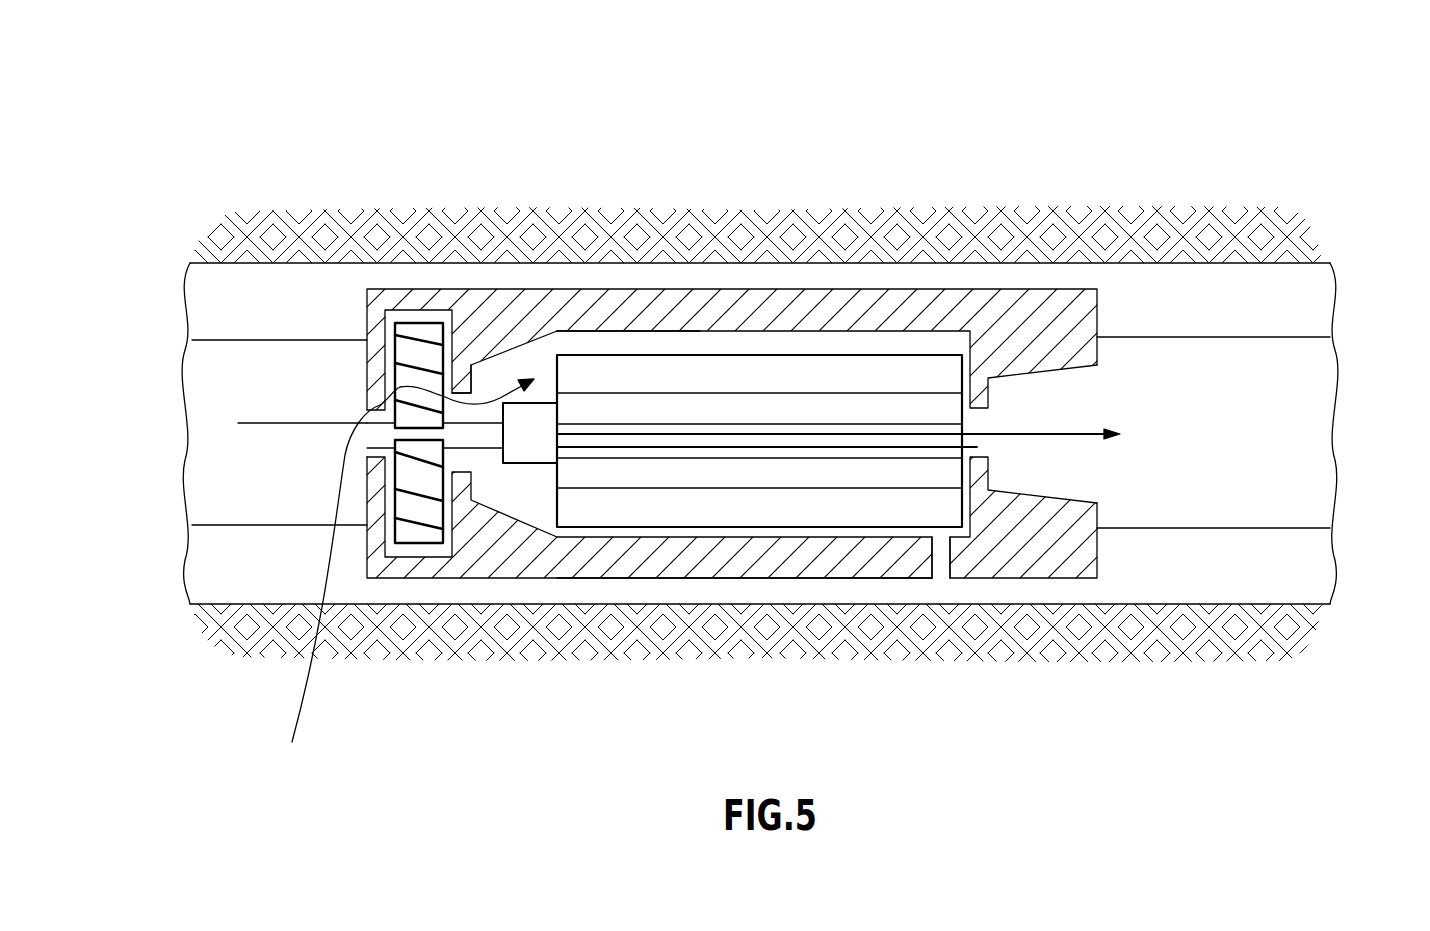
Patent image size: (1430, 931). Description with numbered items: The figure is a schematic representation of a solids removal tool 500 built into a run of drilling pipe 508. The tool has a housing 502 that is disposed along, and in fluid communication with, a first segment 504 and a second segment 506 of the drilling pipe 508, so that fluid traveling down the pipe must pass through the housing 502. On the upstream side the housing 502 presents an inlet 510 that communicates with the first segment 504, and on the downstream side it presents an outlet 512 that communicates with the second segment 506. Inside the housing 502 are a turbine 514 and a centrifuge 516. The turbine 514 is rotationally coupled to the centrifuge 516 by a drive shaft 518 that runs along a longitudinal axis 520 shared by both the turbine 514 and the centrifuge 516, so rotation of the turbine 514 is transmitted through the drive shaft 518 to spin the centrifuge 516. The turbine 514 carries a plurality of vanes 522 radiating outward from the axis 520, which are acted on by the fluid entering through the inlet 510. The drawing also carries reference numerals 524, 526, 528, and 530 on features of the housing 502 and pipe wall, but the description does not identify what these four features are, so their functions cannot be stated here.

The solids removal tool 500 is at (558, 98).
The housing 502 is at (922, 312).
The first segment 504 is at (212, 481).
The second segment 506 is at (1292, 383).
The drilling pipe 508 is at (191, 365).
The inlet 510 is at (389, 576).
The outlet 512 is at (977, 442).
The turbine 514 is at (415, 510).
The centrifuge 516 is at (592, 355).
The drive shaft 518 is at (485, 440).
The longitudinal axis 520 is at (531, 453).
The vanes 522 is at (742, 408).
The passage 524 is at (500, 397).
The port 526 is at (940, 565).
The housing bottom wall 528 is at (745, 590).
The tubular lower wall 530 is at (210, 572).